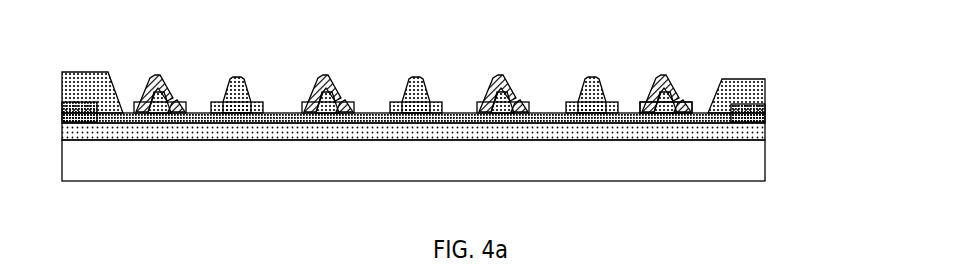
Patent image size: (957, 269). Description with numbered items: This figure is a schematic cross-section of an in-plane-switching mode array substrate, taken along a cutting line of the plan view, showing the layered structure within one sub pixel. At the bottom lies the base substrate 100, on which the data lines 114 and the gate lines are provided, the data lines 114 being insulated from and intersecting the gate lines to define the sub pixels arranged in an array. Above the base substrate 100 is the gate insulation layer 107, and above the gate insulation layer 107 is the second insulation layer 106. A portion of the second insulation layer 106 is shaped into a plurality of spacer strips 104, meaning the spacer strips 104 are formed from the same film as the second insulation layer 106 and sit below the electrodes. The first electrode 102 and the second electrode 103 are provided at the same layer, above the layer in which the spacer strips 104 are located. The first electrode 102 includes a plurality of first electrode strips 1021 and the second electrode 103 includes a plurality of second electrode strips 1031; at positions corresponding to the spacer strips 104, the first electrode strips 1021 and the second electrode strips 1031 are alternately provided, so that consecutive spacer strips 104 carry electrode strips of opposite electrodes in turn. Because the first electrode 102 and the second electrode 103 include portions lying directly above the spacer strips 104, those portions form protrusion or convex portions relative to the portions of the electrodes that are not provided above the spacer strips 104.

The base substrate 100 is at (735, 157).
The gate insulation layer 107 is at (745, 135).
The data line 114 is at (748, 113).
The second insulation layer 106 is at (745, 90).
The second electrode 103 is at (600, 78).
The second electrode strip 1031 is at (421, 77).
The first electrode 102 is at (670, 80).
The first electrode strip 1021 is at (504, 94).
The spacer strip 104 is at (665, 105).